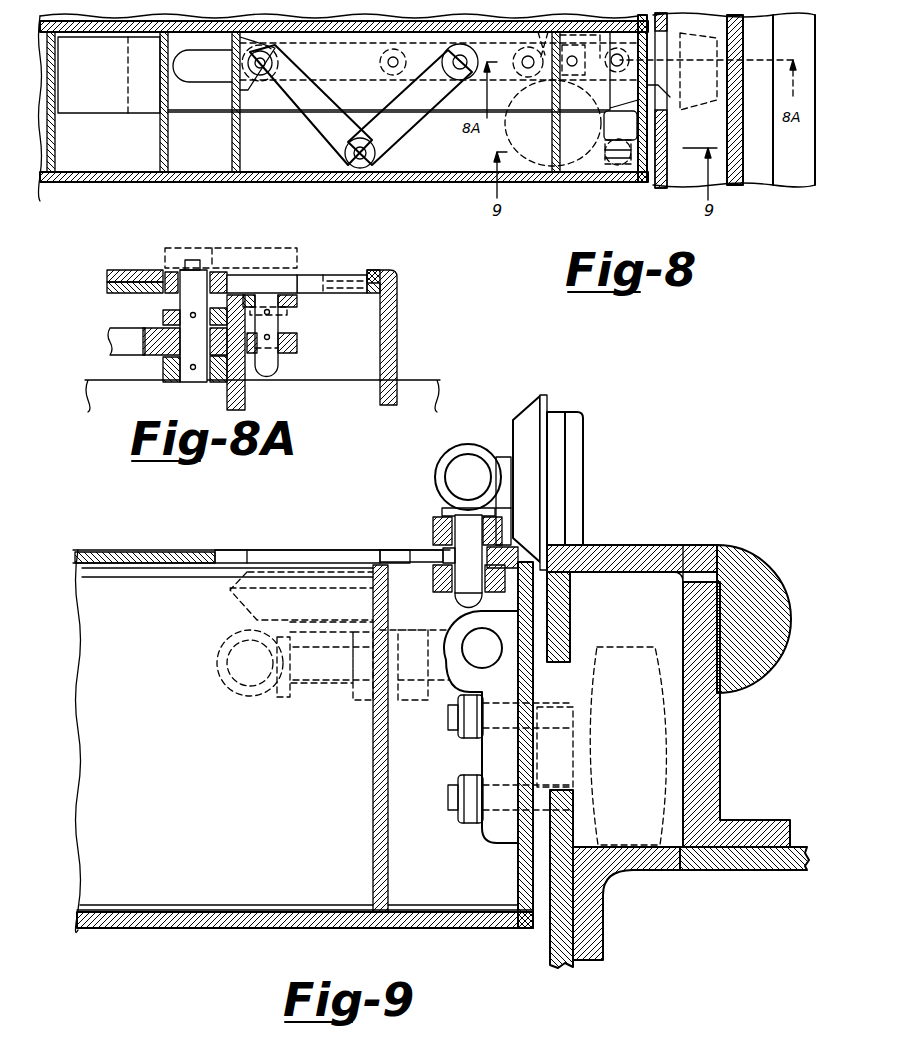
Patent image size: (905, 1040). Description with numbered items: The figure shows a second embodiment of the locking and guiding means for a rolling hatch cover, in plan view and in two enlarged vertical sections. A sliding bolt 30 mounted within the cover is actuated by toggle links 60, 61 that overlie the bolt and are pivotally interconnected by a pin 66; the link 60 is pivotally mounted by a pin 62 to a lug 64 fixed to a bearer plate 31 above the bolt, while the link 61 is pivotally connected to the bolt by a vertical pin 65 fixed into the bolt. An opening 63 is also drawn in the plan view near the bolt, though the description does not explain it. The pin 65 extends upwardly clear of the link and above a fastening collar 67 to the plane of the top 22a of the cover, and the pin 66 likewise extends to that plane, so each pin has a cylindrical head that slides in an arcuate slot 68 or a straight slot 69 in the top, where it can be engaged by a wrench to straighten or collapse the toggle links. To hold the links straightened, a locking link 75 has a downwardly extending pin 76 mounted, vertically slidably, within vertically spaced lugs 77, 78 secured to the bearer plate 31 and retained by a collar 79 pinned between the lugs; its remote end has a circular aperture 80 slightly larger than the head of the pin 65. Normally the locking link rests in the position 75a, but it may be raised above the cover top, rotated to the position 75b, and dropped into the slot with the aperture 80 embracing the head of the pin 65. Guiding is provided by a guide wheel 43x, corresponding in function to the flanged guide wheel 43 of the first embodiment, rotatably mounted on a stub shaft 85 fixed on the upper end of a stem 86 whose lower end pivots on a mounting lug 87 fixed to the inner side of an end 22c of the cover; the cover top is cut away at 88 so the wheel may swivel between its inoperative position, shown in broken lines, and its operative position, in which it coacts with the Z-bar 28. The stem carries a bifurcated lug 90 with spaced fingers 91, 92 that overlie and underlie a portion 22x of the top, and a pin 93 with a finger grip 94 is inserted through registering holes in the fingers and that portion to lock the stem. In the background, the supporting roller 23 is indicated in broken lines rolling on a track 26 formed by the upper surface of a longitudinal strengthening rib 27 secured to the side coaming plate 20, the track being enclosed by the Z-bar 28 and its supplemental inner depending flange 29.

In FIG. 9, the side coaming plate 20 is at (563, 952).
In FIG. 8A, the top of the cover 22a is at (123, 273).
In FIG. 9, the top of the cover 22a is at (190, 550).
In FIG. 9, the end of the cover 22c is at (520, 867).
In FIG. 9, the portion of the cover top 22x is at (443, 553).
In FIG. 9, the roller 23 is at (723, 748).
In FIG. 8, the track 26 is at (697, 177).
In FIG. 9, the track 26 is at (672, 845).
In FIG. 9, the longitudinal strengthening rib 27 is at (653, 863).
In FIG. 9, the Z-bar 28 is at (630, 552).
In FIG. 9, the supplemental inner depending flange 29 is at (557, 617).
In FIG. 8, the sliding bolt 30 is at (457, 100).
In FIG. 8A, the sliding bolt 30 is at (107, 380).
In FIG. 8, the bearer plate 31 is at (168, 138).
In FIG. 8A, the bearer plate 31 is at (247, 393).
In FIG. 9, the bearer plate 31 is at (380, 765).
In FIG. 9, the flanged guide wheel 43 is at (247, 577).
In FIG. 8, the guide wheel 43x is at (667, 132).
In FIG. 9, the guide wheel 43x is at (568, 467).
In FIG. 8, the toggle link 60 is at (323, 133).
In FIG. 8, the toggle link 61 is at (402, 130).
In FIG. 8A, the toggle link 61 is at (120, 332).
In FIG. 8, the pin 62 is at (268, 58).
In FIG. 8, the slot 63 is at (193, 62).
In FIG. 8, the lug 64 is at (249, 42).
In FIG. 8, the vertical pin 65 is at (465, 56).
In FIG. 8A, the vertical pin 65 is at (195, 375).
In FIG. 8, the pin 66 is at (363, 168).
In FIG. 8A, the fastening collar 67 is at (163, 315).
In FIG. 9, the arcuate slot 68 is at (300, 535).
In FIG. 9, the straight slot 69 is at (370, 707).
In FIG. 8, the locking link 75 is at (542, 30).
In FIG. 8A, the locking link 75 is at (290, 282).
In FIG. 8, the locking link inoperative position 75a is at (607, 20).
In FIG. 8A, the locking link inoperative position 75a is at (383, 268).
In FIG. 8A, the locking link rotated position 75b is at (290, 247).
In FIG. 8A, the pin 76 is at (273, 363).
In FIG. 8A, the lug 77 is at (297, 303).
In FIG. 8A, the lug 78 is at (297, 347).
In FIG. 8A, the collar 79 is at (287, 333).
In FIG. 8A, the circular aperture 80 is at (187, 270).
In FIG. 9, the stub shaft 85 is at (510, 462).
In FIG. 9, the stem 86 is at (468, 477).
In FIG. 9, the mounting lug 87 is at (490, 677).
In FIG. 8, the cut-away in cover top 88 is at (583, 152).
In FIG. 8, the bifurcated lug 90 is at (603, 173).
In FIG. 9, the bifurcated lug 90 is at (433, 526).
In FIG. 9, the finger 91 is at (443, 552).
In FIG. 9, the finger 92 is at (443, 577).
In FIG. 9, the pin 93 is at (467, 523).
In FIG. 9, the finger grip 94 is at (448, 455).